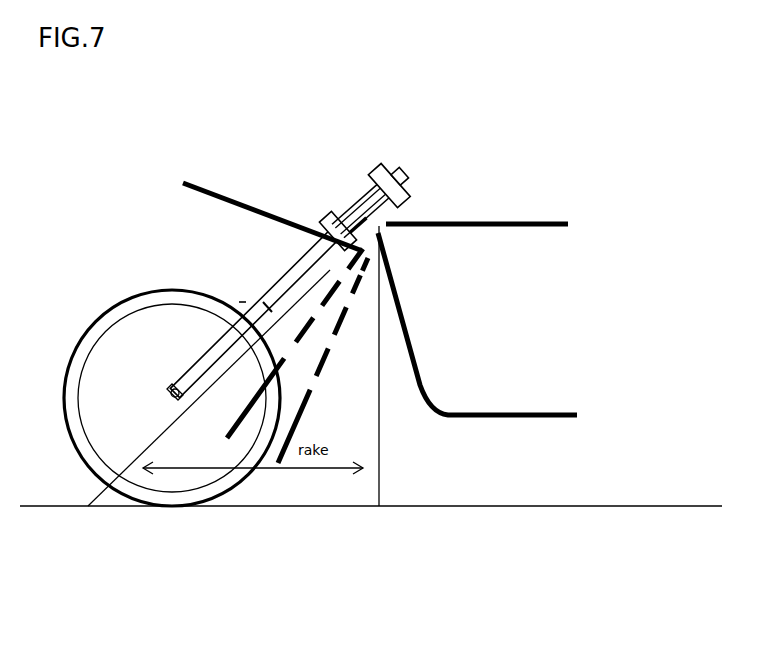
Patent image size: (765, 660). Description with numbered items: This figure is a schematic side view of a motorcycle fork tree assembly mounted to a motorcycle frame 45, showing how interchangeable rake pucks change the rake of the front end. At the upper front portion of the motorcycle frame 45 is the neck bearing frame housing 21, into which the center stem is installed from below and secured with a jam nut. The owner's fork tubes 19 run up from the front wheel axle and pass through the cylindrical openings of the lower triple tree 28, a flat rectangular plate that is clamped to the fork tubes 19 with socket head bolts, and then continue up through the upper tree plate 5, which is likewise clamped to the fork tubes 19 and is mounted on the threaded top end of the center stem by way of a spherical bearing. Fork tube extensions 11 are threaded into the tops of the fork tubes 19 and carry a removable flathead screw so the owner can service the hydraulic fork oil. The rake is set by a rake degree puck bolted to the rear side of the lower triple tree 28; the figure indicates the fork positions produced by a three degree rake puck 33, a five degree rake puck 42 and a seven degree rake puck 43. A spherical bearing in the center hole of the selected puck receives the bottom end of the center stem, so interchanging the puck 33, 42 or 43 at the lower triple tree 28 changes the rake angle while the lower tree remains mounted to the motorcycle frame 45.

The upper tree plate 5 is at (370, 177).
The fork tube extension 11 is at (408, 168).
The fork tubes 19 is at (283, 275).
The neck bearing frame housing 21 is at (393, 222).
The lower triple tree 28 is at (330, 222).
The three degree rake puck 33 is at (362, 282).
The five degree rake puck 42 is at (245, 432).
The seven degree rake puck 43 is at (194, 199).
The motorcycle frame 45 is at (495, 223).